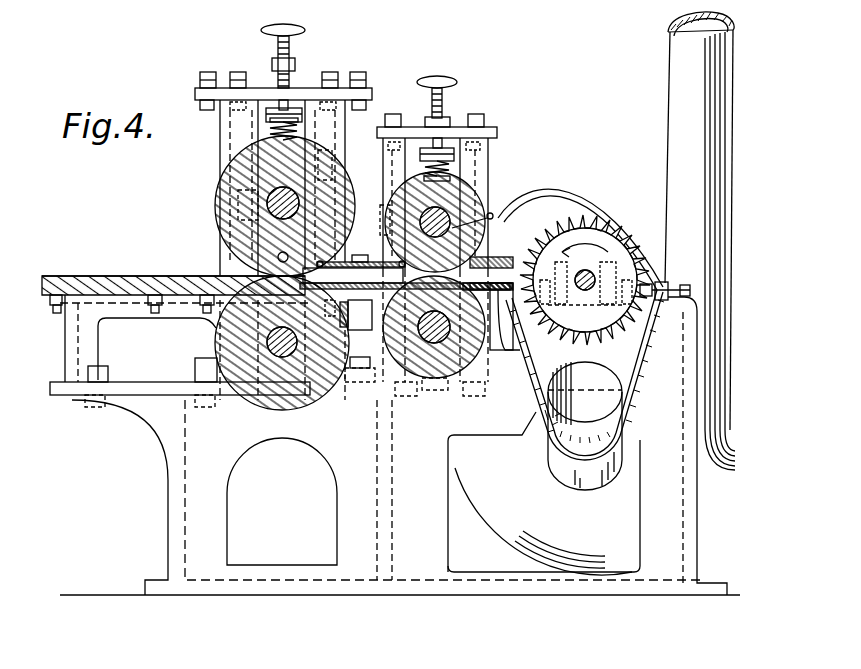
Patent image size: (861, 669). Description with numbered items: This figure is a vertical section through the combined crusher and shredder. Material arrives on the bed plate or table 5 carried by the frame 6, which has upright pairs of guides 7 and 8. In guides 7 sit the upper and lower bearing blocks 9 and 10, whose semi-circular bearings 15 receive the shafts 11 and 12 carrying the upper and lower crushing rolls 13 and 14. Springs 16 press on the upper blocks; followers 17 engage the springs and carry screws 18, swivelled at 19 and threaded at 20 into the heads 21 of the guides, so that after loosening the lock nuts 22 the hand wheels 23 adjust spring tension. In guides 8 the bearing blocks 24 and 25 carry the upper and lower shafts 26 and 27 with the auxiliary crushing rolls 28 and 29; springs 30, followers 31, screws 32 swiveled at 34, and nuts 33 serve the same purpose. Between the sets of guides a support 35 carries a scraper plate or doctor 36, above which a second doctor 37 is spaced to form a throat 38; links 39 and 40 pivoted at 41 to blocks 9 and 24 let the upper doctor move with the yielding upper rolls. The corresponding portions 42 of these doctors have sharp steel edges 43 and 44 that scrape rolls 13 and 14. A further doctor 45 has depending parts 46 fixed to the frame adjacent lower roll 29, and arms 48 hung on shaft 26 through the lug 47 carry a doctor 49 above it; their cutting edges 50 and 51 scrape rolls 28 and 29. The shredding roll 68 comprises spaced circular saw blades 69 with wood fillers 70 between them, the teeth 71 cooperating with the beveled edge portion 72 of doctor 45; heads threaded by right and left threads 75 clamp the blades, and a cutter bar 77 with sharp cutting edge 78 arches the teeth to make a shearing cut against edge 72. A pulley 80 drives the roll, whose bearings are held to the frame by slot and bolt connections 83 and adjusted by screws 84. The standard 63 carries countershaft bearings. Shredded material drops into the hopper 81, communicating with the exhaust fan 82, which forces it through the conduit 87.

The bed plate or table 5 is at (108, 279).
The frame 6 is at (205, 423).
The guides 7 is at (250, 272).
The guides 8 is at (480, 190).
The upper bearing blocks 9 is at (255, 165).
The lower bearing blocks 10 is at (247, 408).
The shaft 11 is at (235, 184).
The shaft 12 is at (275, 400).
The upper crushing roll 13 is at (236, 206).
The lower crushing roll 14 is at (230, 335).
The semi-circular bearings 15 is at (340, 160).
The springs 16 is at (282, 134).
The followers 17 is at (270, 110).
The screws 18 is at (290, 48).
The swivel connection 19 is at (300, 100).
The threads 20 is at (285, 110).
The heads of the guides 21 is at (320, 90).
The lock nuts 22 is at (294, 67).
The hand wheels 23 is at (300, 27).
The bearing blocks 24 is at (474, 210).
The bearing blocks 25 is at (420, 386).
The upper shaft 26 is at (481, 216).
The lower shaft 27 is at (462, 386).
The auxiliary crushing roll 28 is at (470, 185).
The auxiliary crushing roll 29 is at (441, 403).
The springs 30 is at (458, 174).
The followers 31 is at (452, 150).
The screws 32 is at (439, 77).
The nuts 33 is at (420, 80).
The swivel 34 is at (447, 146).
The support 35 is at (360, 359).
The scraper plate or doctor 36 is at (356, 334).
The second scraper plate or doctor 37 is at (356, 262).
The throat 38 is at (326, 318).
The link 39 is at (340, 178).
The link 40 is at (392, 222).
The pivot 41 is at (393, 132).
The corresponding portions 42 is at (361, 272).
The sharp steel edge 43 is at (406, 278).
The sharp steel edge 44 is at (280, 282).
The scraper plate or doctor 45 is at (562, 332).
The depending parts 46 is at (520, 372).
The lug 47 is at (522, 216).
The arms 48 is at (493, 216).
The scraper plate or doctor 49 is at (500, 275).
The sharp steel cutting edge 50 is at (437, 237).
The sharp steel cutting edge 51 is at (440, 316).
The standard 63 is at (616, 341).
The shredding roll 68 is at (640, 241).
The saw blades 69 is at (650, 346).
The fillers 70 is at (645, 256).
The teeth 71 is at (630, 233).
The edge portion 72 is at (600, 322).
The right and left threads 75 is at (498, 260).
The cutter bar 77 is at (612, 204).
The sharp cutting edge 78 is at (586, 222).
The pulley 80 is at (633, 206).
The hopper 81 is at (633, 391).
The exhaust fan 82 is at (544, 493).
The slot and bolt connections 83 is at (664, 270).
The screws 84 is at (692, 291).
The conduit 87 is at (722, 100).